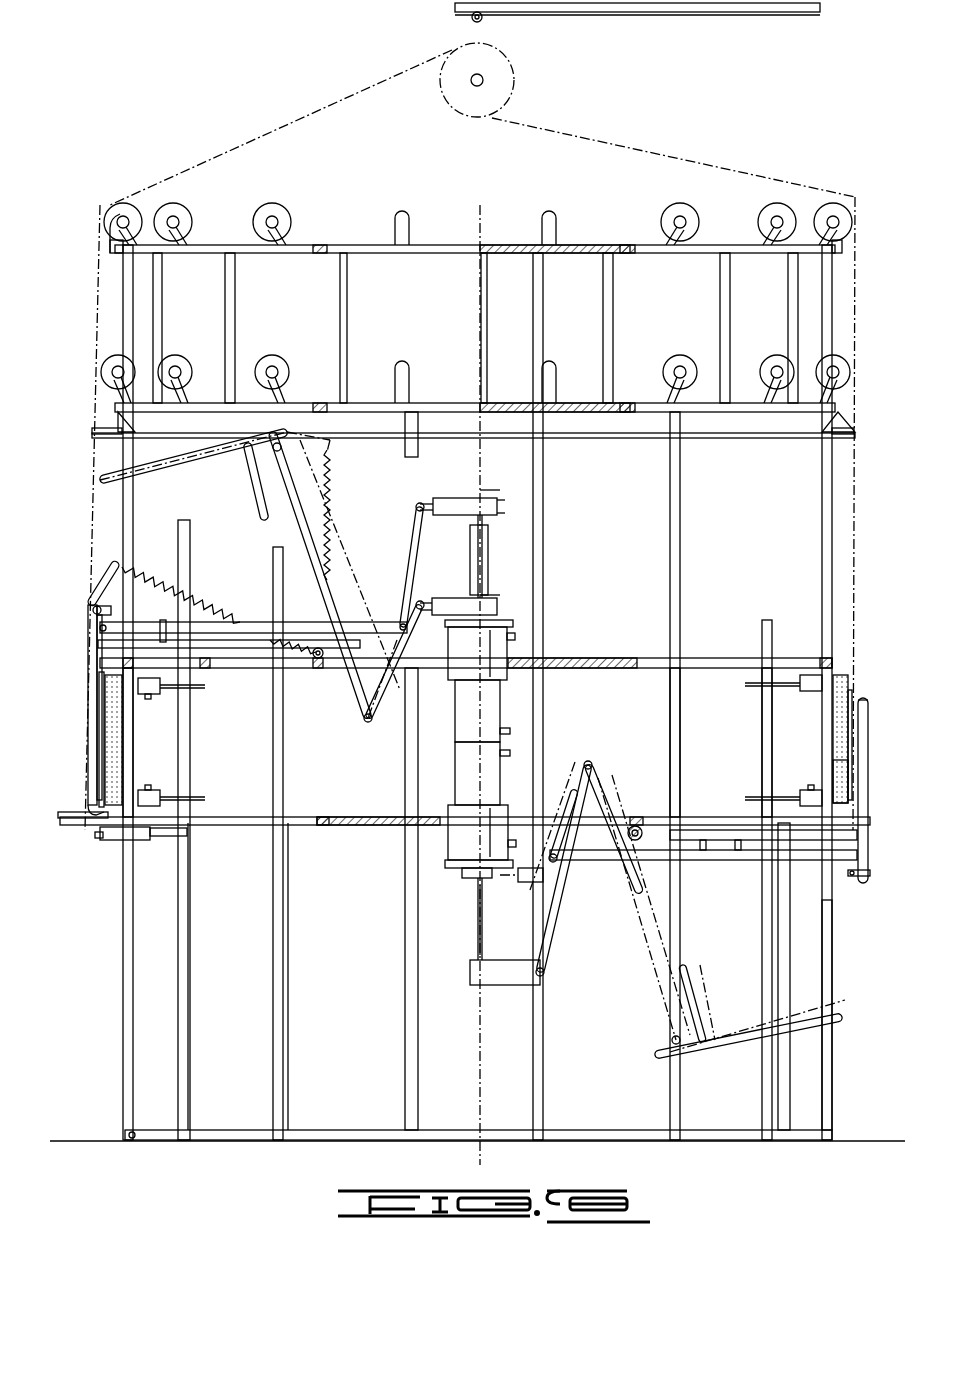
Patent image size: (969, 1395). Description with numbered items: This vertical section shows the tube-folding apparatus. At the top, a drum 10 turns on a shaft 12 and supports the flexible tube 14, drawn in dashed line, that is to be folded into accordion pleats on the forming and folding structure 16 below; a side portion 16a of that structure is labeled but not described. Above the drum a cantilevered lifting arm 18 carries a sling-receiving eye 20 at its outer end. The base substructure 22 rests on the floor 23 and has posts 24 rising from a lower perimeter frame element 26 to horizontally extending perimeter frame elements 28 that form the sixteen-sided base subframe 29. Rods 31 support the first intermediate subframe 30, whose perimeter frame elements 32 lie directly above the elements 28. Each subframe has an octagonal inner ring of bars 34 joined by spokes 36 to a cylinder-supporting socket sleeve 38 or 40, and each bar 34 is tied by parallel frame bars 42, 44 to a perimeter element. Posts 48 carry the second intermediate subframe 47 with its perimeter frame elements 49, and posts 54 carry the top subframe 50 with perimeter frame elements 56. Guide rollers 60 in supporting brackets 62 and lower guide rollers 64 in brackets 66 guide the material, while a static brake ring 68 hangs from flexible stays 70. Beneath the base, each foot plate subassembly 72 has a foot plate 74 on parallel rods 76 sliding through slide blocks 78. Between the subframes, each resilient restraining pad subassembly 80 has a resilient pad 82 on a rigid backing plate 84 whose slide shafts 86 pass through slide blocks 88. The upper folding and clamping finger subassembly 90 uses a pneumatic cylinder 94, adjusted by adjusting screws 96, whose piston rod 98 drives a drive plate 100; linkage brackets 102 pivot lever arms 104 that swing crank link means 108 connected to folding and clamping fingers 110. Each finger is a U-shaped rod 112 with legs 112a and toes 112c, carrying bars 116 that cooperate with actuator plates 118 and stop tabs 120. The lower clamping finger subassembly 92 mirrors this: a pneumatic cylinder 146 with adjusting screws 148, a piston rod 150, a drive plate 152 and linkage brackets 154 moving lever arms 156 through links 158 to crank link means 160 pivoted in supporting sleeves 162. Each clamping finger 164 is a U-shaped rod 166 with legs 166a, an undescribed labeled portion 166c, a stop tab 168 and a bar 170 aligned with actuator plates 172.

The drum 10 is at (503, 73).
The shaft 12 is at (483, 82).
The tube 14 is at (600, 140).
The forming and folding structure 16 is at (862, 528).
The frame side 16a is at (872, 802).
The lifting arm 18 is at (665, 14).
The sling-receiving eye 20 is at (471, 19).
The base substructure 22 is at (834, 1052).
The floor 23 is at (852, 1140).
The posts 24 is at (123, 962).
The lower perimeter frame element 26 is at (357, 1130).
The perimeter frame elements 28 is at (225, 817).
The base subframe 29 is at (325, 814).
The first intermediate subframe 30 is at (692, 656).
The rods 31 is at (135, 746).
The perimeter frame elements 32 is at (825, 658).
The bars 34 is at (320, 246).
The spokes 36 is at (386, 255).
The cylinder-supporting socket sleeve 38 is at (476, 652).
The cylinder-supporting socket sleeve 40 is at (473, 835).
The frame bar 42 is at (316, 660).
The frame bar 44 is at (740, 255).
The second intermediate subframe 47 is at (445, 402).
The posts 48 is at (133, 525).
The perimeter frame elements 49 is at (118, 405).
The top subframe 50 is at (440, 244).
The posts 54 is at (123, 300).
The perimeter frame elements 56 is at (110, 250).
The guide rollers 60 is at (182, 210).
The supporting brackets 62 is at (558, 230).
The lower guide rollers 64 is at (112, 368).
The brackets 66 is at (286, 388).
The static brake ring 68 is at (95, 438).
The flexible stays 70 is at (112, 422).
The foot plate subassembly 72 is at (92, 836).
The foot plate 74 is at (65, 819).
The parallel rods 76 is at (165, 837).
The slide blocks 78 is at (120, 841).
The resilient restraining pad subassembly 80 is at (868, 680).
The resilient pad 82 is at (120, 716).
The rigid backing plate 84 is at (125, 730).
The slide shafts 86 is at (206, 687).
The slide blocks 88 is at (150, 790).
The upper folding and clamping finger subassembly 90 is at (492, 545).
The lower clamping finger subassembly 92 is at (470, 955).
The pneumatic cylinder 94 is at (476, 715).
The adjusting screws 96 is at (500, 610).
The piston rod 98 is at (484, 528).
The drive plate 100 is at (486, 497).
The linkage brackets 102 is at (436, 498).
The lever arm 104 is at (415, 536).
The crank link means 108 is at (300, 612).
The folding and clamping finger 110 is at (78, 730).
The U-shaped rod 112 is at (152, 478).
The legs 112a is at (88, 658).
The toes 112c is at (330, 452).
The bars 116 is at (246, 488).
The actuator plates 118 is at (213, 656).
The stop tabs 120 is at (273, 449).
The pneumatic cylinder 146 is at (455, 775).
The adjusting screws 148 is at (462, 876).
The piston rod 150 is at (335, 492).
The drive plate 152 is at (520, 890).
The linkage brackets 154 is at (536, 985).
The lever arm 156 is at (575, 790).
The links 158 is at (592, 765).
The crank link means 160 is at (723, 868).
The pivotal supporting sleeves 162 is at (640, 826).
The clamping finger 164 is at (690, 1058).
The U-shaped rod 166 is at (869, 782).
The legs 166a is at (843, 1000).
The clamp bar end 166c is at (869, 706).
The stop tab 168 is at (862, 878).
The bar 170 is at (790, 862).
The actuator plates 172 is at (722, 848).